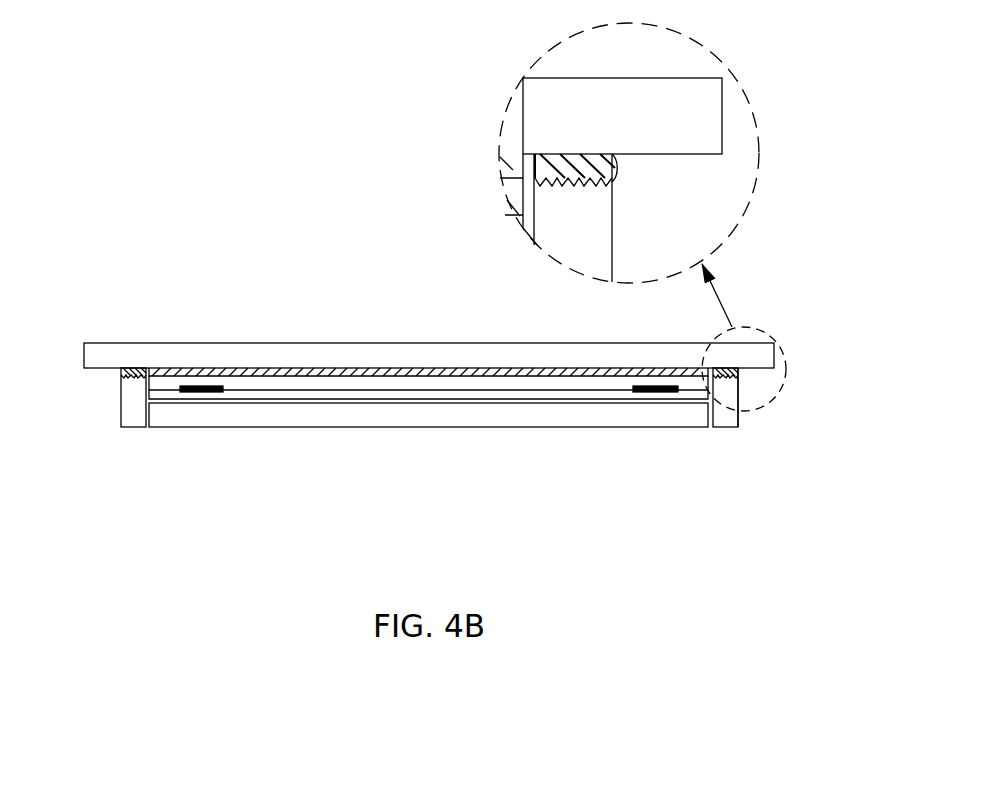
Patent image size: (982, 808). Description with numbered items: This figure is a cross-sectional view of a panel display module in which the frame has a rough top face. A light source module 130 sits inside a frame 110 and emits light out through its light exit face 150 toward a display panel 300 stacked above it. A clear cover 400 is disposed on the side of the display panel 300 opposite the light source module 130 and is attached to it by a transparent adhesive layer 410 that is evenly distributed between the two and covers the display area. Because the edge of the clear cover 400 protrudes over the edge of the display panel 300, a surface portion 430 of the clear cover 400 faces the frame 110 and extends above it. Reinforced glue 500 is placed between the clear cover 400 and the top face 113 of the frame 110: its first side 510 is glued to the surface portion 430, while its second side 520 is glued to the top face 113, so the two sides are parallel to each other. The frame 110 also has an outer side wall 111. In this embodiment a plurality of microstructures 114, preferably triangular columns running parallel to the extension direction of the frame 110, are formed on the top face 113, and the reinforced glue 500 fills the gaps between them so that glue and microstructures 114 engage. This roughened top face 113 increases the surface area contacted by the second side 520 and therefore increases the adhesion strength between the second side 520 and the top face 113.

The frame 110 is at (722, 418).
The outer side wall 111 is at (742, 418).
The top face 113 is at (724, 377).
The microstructures 114 is at (612, 182).
The light source module 130 is at (413, 415).
The light exit face 150 is at (337, 402).
The display panel 300 is at (262, 382).
The clear cover 400 is at (575, 357).
The transparent adhesive layer 410 is at (470, 374).
The surface portion 430 is at (766, 373).
The reinforced glue 500 is at (136, 377).
The first side 510 is at (130, 366).
The second side 520 is at (136, 381).